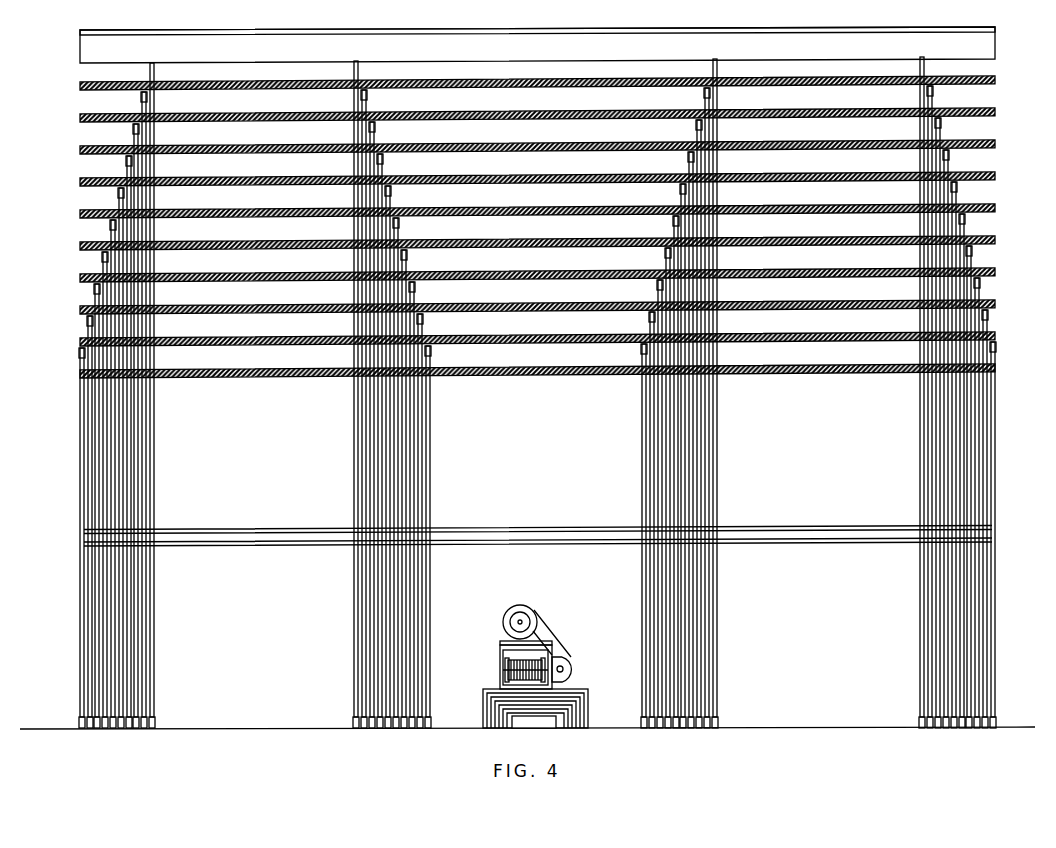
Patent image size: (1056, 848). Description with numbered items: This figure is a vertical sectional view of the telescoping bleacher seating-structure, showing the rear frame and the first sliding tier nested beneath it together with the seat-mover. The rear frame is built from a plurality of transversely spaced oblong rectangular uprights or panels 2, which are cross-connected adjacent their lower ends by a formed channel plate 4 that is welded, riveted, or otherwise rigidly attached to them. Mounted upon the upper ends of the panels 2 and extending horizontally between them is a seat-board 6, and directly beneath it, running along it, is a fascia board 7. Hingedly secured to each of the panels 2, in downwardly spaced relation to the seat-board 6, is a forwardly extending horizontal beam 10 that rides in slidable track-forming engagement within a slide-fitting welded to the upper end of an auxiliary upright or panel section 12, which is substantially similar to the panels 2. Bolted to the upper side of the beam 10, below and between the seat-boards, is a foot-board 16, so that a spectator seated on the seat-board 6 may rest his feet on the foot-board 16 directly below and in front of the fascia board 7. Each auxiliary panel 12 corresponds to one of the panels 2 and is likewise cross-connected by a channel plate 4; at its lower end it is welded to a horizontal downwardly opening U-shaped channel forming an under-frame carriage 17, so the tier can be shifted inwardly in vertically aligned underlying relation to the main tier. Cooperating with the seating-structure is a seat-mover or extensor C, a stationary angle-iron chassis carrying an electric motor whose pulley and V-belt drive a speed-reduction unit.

The seat-board 6 is at (80, 32).
The fascia board 7 is at (80, 45).
The foot-board 16 is at (80, 86).
The horizontal element or beam 10 is at (935, 90).
The uprights or panels 2 is at (542, 425).
The auxiliary upright or panel section 12 is at (147, 432).
The channel plate 4 is at (246, 529).
The seat-mover or extensor C is at (551, 620).
The under-frame carriage 17 is at (75, 730).